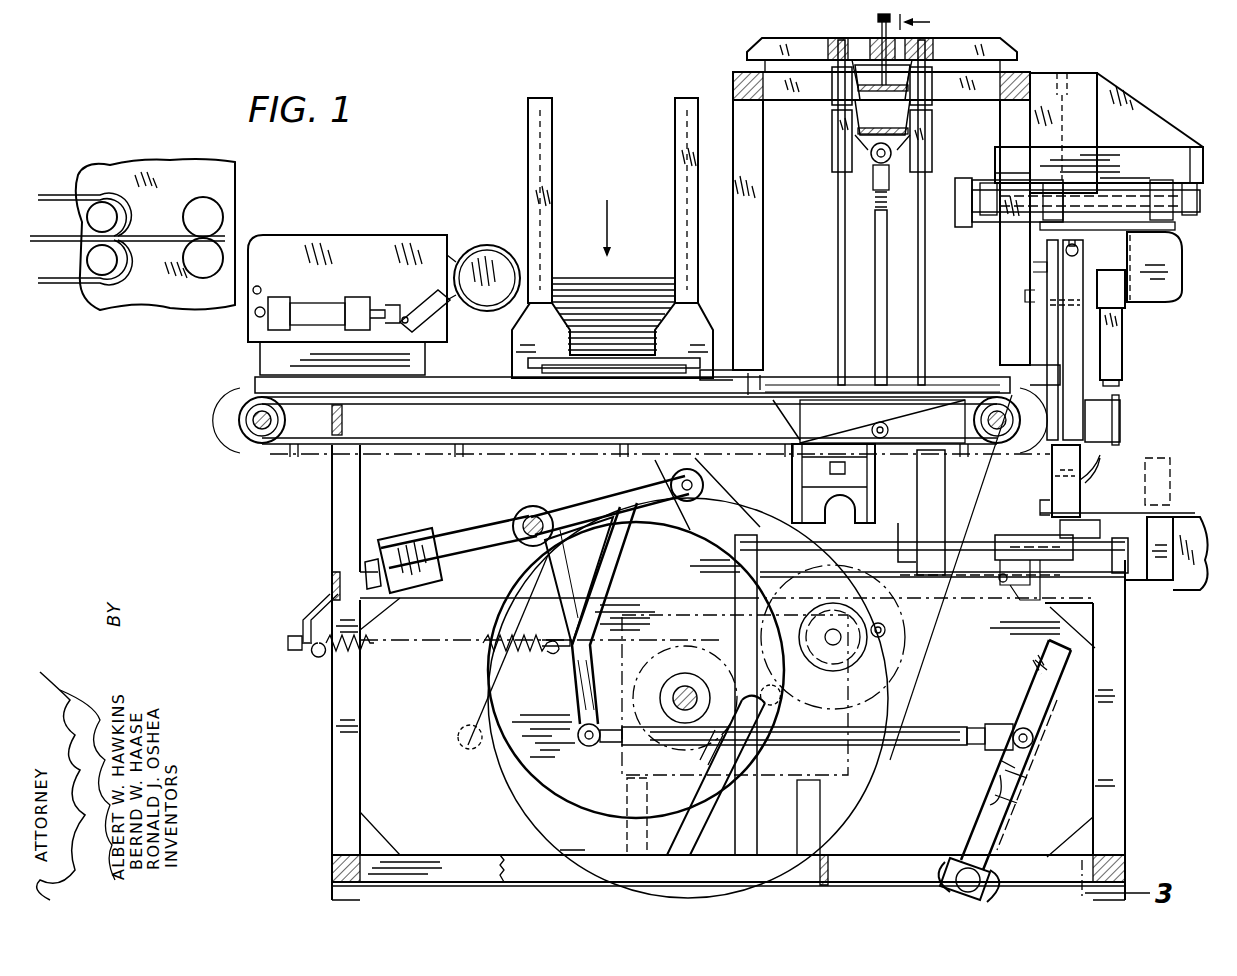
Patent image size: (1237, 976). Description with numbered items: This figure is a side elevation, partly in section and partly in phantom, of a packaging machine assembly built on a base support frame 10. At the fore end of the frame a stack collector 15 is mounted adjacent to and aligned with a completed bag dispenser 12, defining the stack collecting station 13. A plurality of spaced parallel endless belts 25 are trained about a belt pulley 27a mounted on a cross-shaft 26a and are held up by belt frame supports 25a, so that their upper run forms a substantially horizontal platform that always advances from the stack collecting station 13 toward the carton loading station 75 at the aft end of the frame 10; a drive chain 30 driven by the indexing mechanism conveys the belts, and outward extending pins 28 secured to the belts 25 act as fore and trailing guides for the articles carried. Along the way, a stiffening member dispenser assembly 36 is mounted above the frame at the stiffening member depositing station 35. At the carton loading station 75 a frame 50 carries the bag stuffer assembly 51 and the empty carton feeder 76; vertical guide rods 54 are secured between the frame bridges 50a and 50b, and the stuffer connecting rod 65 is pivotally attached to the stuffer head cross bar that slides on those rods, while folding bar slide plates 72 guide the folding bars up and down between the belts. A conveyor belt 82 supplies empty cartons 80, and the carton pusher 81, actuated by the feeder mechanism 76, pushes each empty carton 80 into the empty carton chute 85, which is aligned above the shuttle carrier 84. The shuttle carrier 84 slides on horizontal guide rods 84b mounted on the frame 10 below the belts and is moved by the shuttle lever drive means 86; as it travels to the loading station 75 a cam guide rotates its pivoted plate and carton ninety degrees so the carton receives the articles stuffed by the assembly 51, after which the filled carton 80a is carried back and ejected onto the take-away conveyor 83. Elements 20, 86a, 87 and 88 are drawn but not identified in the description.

The base support frame 10 is at (333, 522).
The completed bag dispenser 12 is at (174, 166).
The stack collecting station 13 is at (366, 272).
The stack collector 15 is at (430, 240).
The feed roll 20 is at (504, 260).
The endless belts 25 is at (600, 427).
The belt frame supports 25a is at (395, 405).
The cross-shaft 26a is at (262, 430).
The belt pulley 27a is at (250, 410).
The outward extending pins 28 is at (426, 384).
The drive chain 30 is at (885, 633).
The stiffening member depositing station 35 is at (612, 199).
The stiffening member dispenser assembly 36 is at (638, 220).
The frame 50 is at (891, 214).
The frame bridge 50a is at (1000, 52).
The frame bridge 50b is at (775, 374).
The bag stuffer assembly 51 is at (905, 252).
The vertical guide rods 54 is at (930, 192).
The stuffer connecting rod 65 is at (872, 222).
The folding bar slide plate 72 is at (833, 577).
The carton loading station 75 is at (937, 345).
The empty carton feeder 76 is at (1164, 109).
The empty carton 80 is at (1112, 298).
The filled carton 80a is at (1161, 478).
The carton pusher 81 is at (1158, 262).
The conveyor belt 82 is at (1118, 330).
The take-away conveyor 83 is at (1160, 515).
The shuttle carrier 84 is at (1065, 527).
The shuttle carrier guide rods 84b is at (977, 545).
The empty carton chute 85 is at (1075, 287).
The shuttle lever drive means 86 is at (1040, 700).
The connecting rod 86a is at (940, 735).
The bell crank lever 87 is at (628, 498).
The flywheel 88 is at (850, 785).